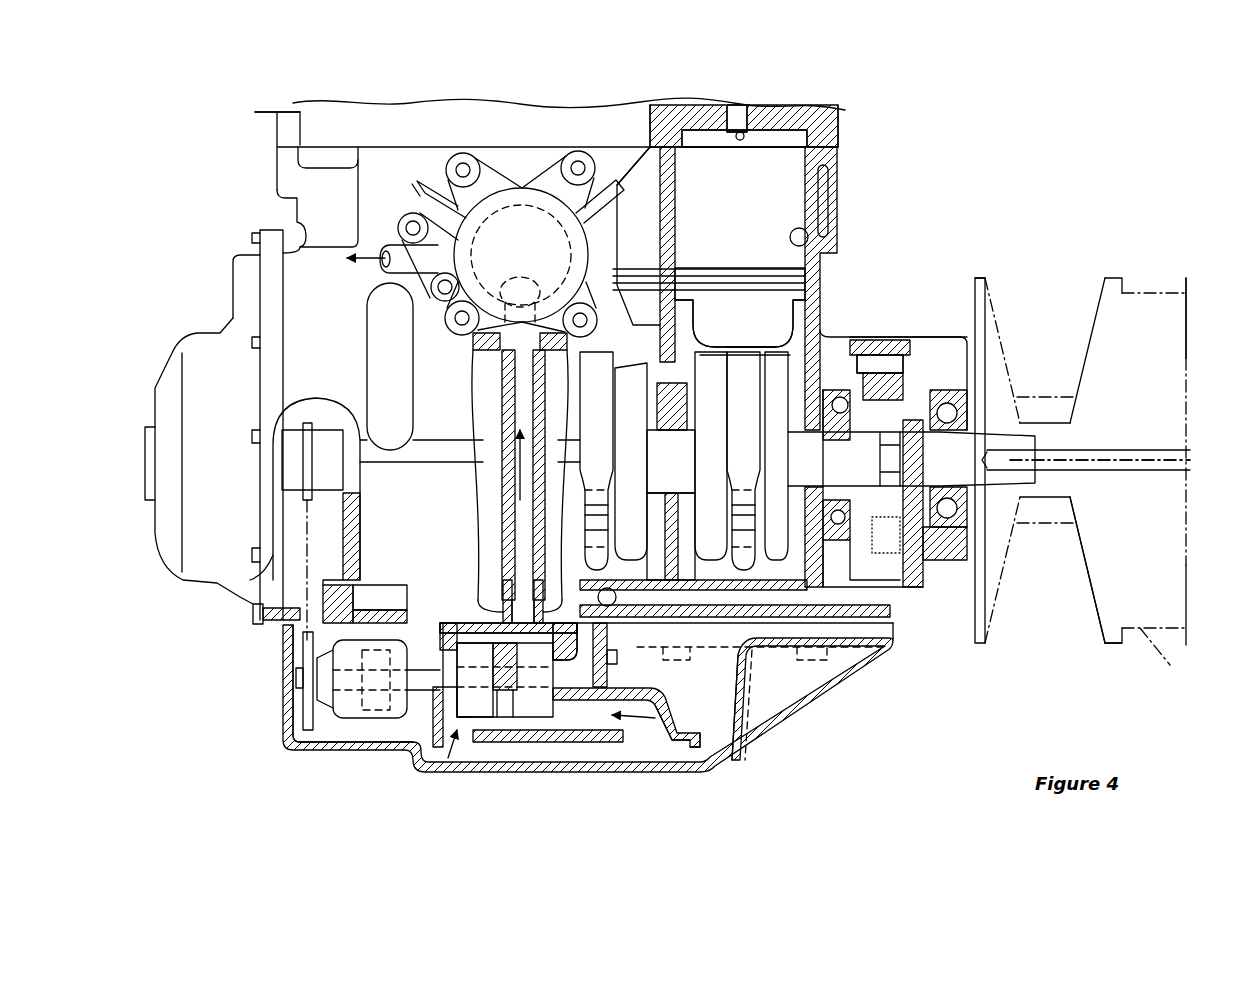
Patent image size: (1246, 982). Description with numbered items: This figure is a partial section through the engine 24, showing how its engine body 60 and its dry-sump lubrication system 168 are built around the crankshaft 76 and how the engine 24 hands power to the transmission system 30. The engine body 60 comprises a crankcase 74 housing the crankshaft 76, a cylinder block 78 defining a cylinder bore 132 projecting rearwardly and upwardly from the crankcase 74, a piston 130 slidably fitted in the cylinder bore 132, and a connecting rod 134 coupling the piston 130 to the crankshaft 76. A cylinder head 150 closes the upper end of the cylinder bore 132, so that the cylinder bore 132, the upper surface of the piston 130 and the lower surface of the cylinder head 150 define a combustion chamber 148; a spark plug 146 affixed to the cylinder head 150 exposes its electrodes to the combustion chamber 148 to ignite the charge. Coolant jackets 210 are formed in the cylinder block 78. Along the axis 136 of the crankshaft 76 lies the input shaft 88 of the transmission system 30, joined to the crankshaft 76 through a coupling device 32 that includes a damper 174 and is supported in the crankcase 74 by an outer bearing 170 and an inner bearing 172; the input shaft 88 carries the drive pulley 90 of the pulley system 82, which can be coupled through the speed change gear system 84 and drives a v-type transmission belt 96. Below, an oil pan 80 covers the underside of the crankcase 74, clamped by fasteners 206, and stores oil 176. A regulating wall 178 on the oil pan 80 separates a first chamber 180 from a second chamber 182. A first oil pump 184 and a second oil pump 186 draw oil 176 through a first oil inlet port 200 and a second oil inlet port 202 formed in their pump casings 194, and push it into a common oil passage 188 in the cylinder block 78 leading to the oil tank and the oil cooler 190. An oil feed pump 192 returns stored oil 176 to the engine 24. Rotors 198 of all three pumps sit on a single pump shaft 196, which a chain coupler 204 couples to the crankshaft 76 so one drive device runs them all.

The engine 24 is at (1007, 160).
The transmission system 30 is at (1134, 230).
The coupling device 32 is at (918, 388).
The engine body 60 is at (945, 226).
The crankcase 74 is at (293, 400).
The crankshaft 76 is at (712, 370).
The cylinder block 78 is at (822, 268).
The oil pan 80 is at (803, 712).
The pulley system 82 is at (1119, 652).
The speed change gear system 84 is at (1068, 692).
The input shaft 88 is at (998, 490).
The drive pulley 90 is at (1128, 648).
The transmission belt 96 is at (1067, 523).
The piston 130 is at (758, 303).
The cylinder bore 132 is at (806, 232).
The connecting rod 134 is at (813, 370).
The axis of the crankshaft 136 is at (1126, 462).
The spark plug 146 is at (738, 137).
The combustion chamber 148 is at (713, 170).
The cylinder head 150 is at (778, 115).
The lubrication system 168 is at (240, 670).
The outer bearing 170 is at (955, 515).
The inner bearing 172 is at (833, 575).
The damper 174 is at (905, 590).
The oil 176 is at (738, 732).
The regulating wall 178 is at (577, 750).
The first chamber 180 is at (343, 735).
The second chamber 182 is at (712, 740).
The first oil pump 184 is at (527, 626).
The second oil pump 186 is at (565, 641).
The oil passage 188 is at (522, 385).
The oil cooler 190 is at (485, 244).
The oil feed pump 192 is at (397, 626).
The pump casing 194 is at (392, 720).
The pump shaft 196 is at (296, 688).
The rotor 198 is at (380, 715).
The first oil inlet port 200 is at (445, 738).
The second oil inlet port 202 is at (655, 737).
The chain coupler 204 is at (303, 530).
The fastener 206 is at (725, 662).
The coolant jacket 210 is at (830, 182).